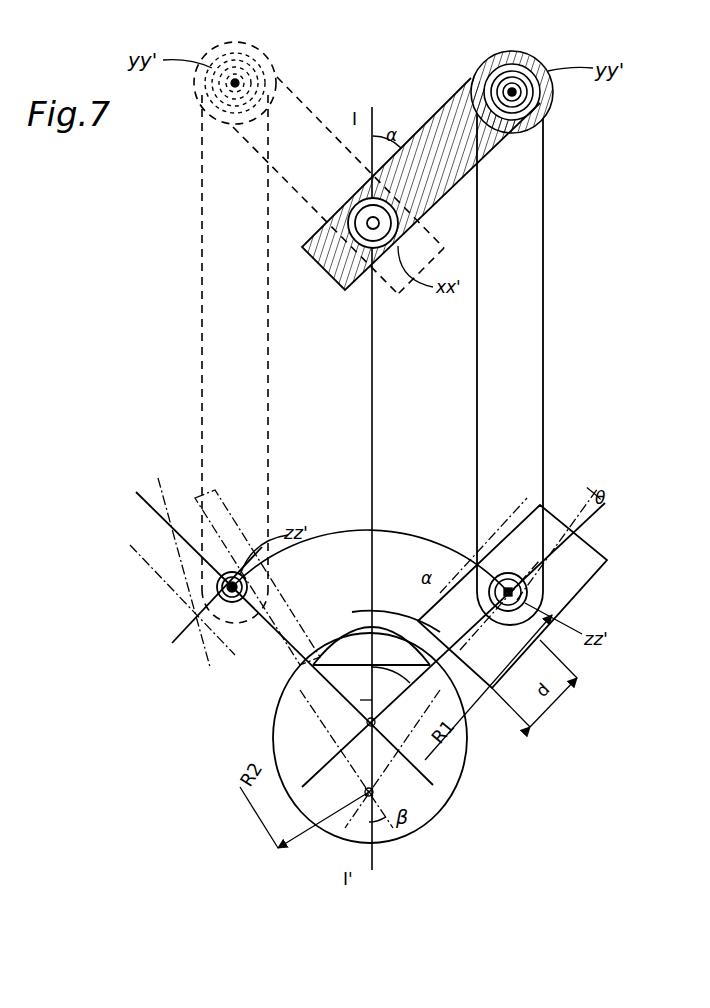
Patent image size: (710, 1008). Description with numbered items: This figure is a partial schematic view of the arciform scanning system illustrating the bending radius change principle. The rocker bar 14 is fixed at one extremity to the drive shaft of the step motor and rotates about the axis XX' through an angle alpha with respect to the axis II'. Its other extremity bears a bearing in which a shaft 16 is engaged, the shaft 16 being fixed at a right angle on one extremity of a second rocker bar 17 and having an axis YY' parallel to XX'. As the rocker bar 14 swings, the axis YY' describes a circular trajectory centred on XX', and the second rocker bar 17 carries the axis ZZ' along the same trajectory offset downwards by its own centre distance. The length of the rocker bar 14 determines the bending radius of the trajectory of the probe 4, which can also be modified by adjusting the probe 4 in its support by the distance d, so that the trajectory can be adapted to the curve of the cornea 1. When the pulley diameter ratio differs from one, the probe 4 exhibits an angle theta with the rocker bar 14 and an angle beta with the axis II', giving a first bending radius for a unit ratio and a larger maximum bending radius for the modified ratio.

The cornea 1 is at (352, 612).
The probe 4 is at (152, 560).
The rocker bar 14 is at (318, 122).
The shaft 16 is at (541, 121).
The second rocker bar 17 is at (202, 307).